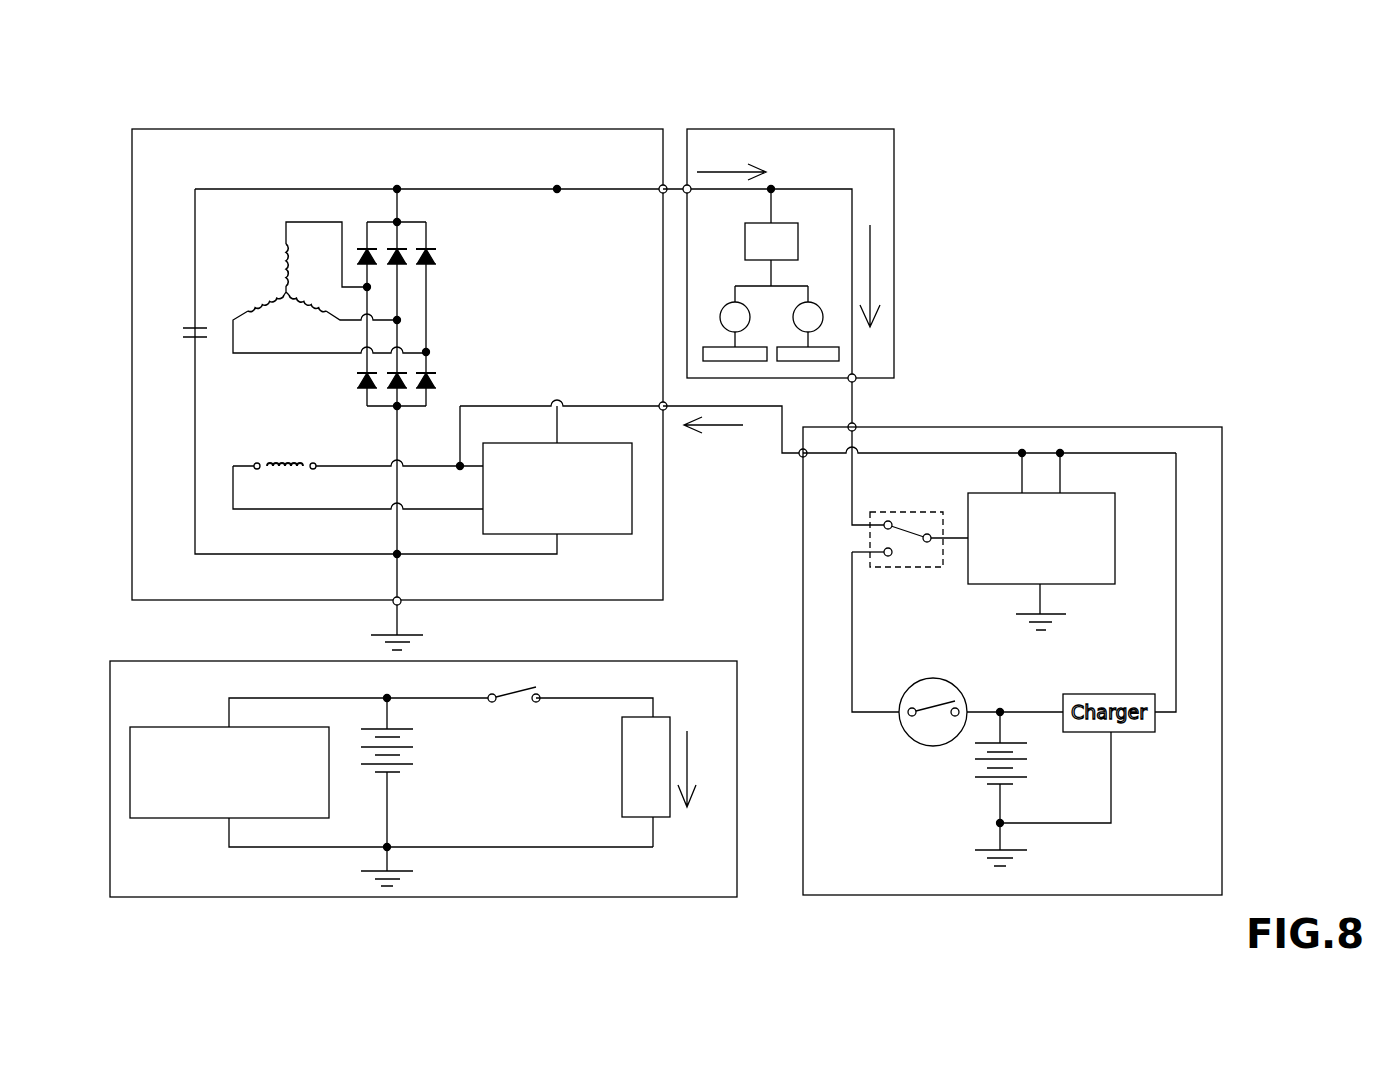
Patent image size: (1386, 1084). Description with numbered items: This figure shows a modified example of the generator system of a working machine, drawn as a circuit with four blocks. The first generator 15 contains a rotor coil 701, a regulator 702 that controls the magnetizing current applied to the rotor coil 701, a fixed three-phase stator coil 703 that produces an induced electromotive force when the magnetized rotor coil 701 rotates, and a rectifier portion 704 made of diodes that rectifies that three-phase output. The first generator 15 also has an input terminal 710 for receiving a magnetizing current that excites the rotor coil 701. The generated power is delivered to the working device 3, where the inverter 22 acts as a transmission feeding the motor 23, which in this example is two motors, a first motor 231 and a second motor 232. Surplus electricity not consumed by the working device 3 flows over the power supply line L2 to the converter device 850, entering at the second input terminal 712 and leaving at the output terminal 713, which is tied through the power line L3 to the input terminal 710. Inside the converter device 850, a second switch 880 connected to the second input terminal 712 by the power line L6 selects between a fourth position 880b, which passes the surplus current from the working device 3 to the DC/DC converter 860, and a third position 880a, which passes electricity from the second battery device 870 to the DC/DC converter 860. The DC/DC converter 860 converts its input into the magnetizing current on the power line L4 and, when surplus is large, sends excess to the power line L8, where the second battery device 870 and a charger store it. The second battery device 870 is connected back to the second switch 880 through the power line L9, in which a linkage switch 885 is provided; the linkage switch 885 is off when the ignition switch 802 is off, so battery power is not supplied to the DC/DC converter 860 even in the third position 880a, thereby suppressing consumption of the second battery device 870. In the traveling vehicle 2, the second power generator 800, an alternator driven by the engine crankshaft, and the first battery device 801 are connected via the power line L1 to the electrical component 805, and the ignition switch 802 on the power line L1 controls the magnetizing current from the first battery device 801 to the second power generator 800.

The first generator 15 is at (578, 129).
The working device 3 is at (783, 129).
The power supply line L2 is at (835, 189).
The inverter 22 is at (783, 223).
The motor 23 is at (867, 335).
The second motor 232 is at (822, 323).
The first motor 231 is at (745, 330).
The stator coil 703 is at (318, 306).
The rectifier portion 704 is at (438, 252).
The rotor coil 701 is at (286, 462).
The regulator 702 is at (599, 534).
The input terminal 710 is at (660, 404).
The second input terminal 712 is at (854, 425).
The output terminal 713 is at (803, 457).
The power line L3 is at (762, 408).
The power line L4 is at (1023, 482).
The power line L6 is at (850, 493).
The power line L8 is at (1176, 520).
The power line L9 is at (853, 716).
The converter device 850 is at (1222, 470).
The DC/DC converter 860 is at (1116, 530).
The second switch 880 is at (904, 560).
The third position 880a is at (892, 573).
The fourth position 880b is at (902, 514).
The linkage switch 885 is at (933, 747).
The second battery device 870 is at (1042, 768).
The traveling vehicle 2 is at (697, 661).
The second power generator 800 is at (175, 820).
The first battery device 801 is at (426, 764).
The ignition switch 802 is at (517, 690).
The electrical component 805 is at (658, 817).
The power line L1 is at (587, 700).